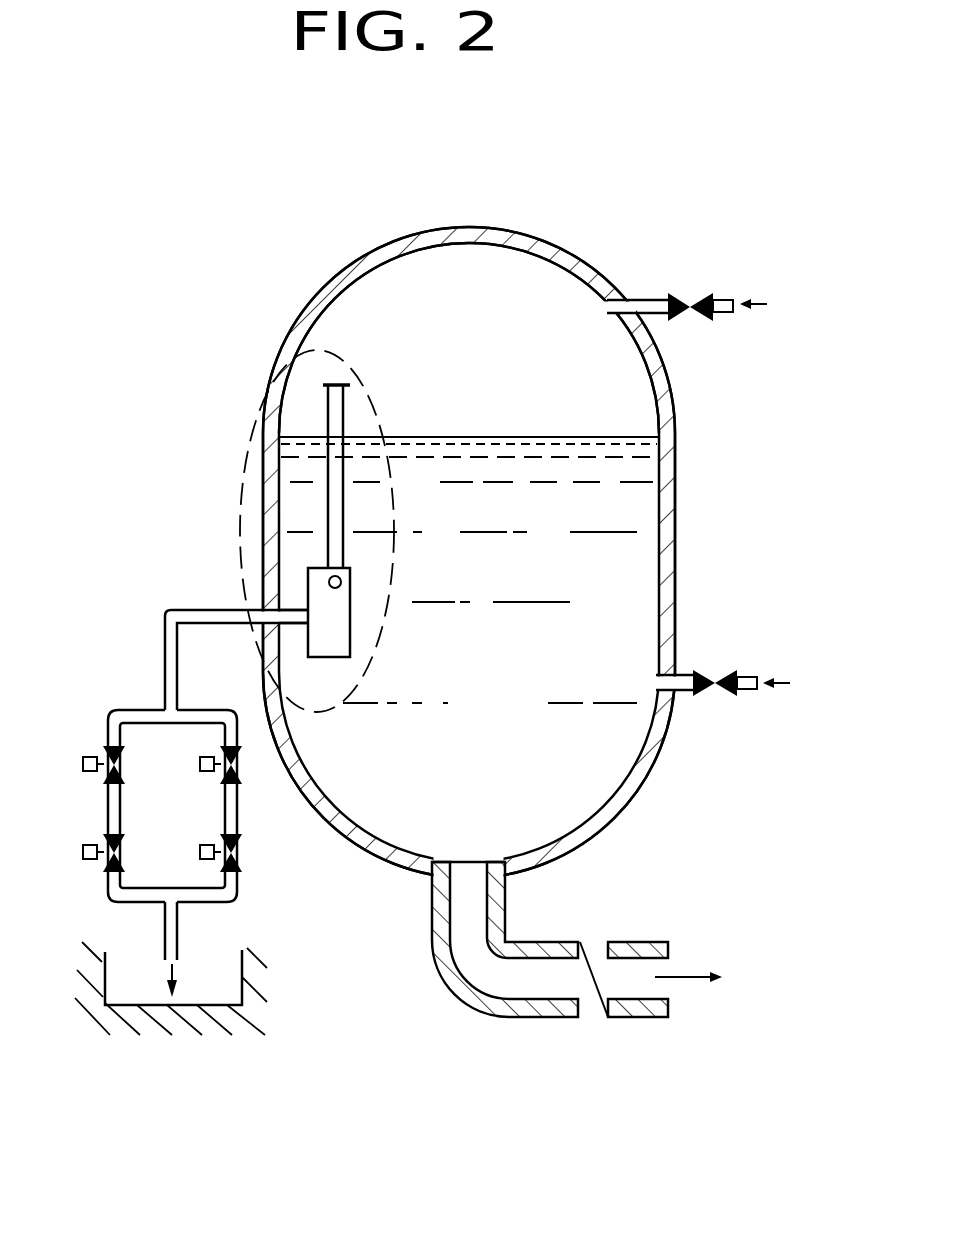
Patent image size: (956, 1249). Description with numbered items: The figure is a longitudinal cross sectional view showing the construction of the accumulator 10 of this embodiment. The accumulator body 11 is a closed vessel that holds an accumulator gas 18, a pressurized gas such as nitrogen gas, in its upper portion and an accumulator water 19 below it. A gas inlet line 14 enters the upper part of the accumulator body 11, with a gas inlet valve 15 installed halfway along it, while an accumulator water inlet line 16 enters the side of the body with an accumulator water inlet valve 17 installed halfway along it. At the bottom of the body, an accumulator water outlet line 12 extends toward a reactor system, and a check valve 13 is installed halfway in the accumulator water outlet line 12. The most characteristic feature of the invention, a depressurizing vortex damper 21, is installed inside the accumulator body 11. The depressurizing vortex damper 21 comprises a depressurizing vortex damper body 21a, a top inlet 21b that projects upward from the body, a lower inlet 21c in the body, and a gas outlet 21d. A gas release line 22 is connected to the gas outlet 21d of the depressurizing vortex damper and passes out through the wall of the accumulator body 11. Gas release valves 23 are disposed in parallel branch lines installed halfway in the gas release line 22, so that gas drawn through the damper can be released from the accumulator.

The accumulator 10 is at (297, 303).
The accumulator body 11 is at (522, 234).
The accumulator water outlet line 12 is at (432, 970).
The check valve 13 is at (590, 1013).
The gas inlet line 14 is at (643, 303).
The gas inlet valve 15 is at (686, 300).
The accumulator water inlet line 16 is at (680, 690).
The accumulator water inlet valve 17 is at (726, 694).
The accumulator gas 18 is at (395, 272).
The accumulator water 19 is at (637, 466).
The depressurizing vortex damper 21 is at (380, 638).
The depressurizing vortex damper body 21a is at (333, 660).
The top inlet 21b is at (344, 407).
The lower inlet 21c is at (342, 583).
The gas outlet 21d is at (305, 632).
The gas release line 22 is at (193, 610).
The gas release valves 23 is at (90, 844).